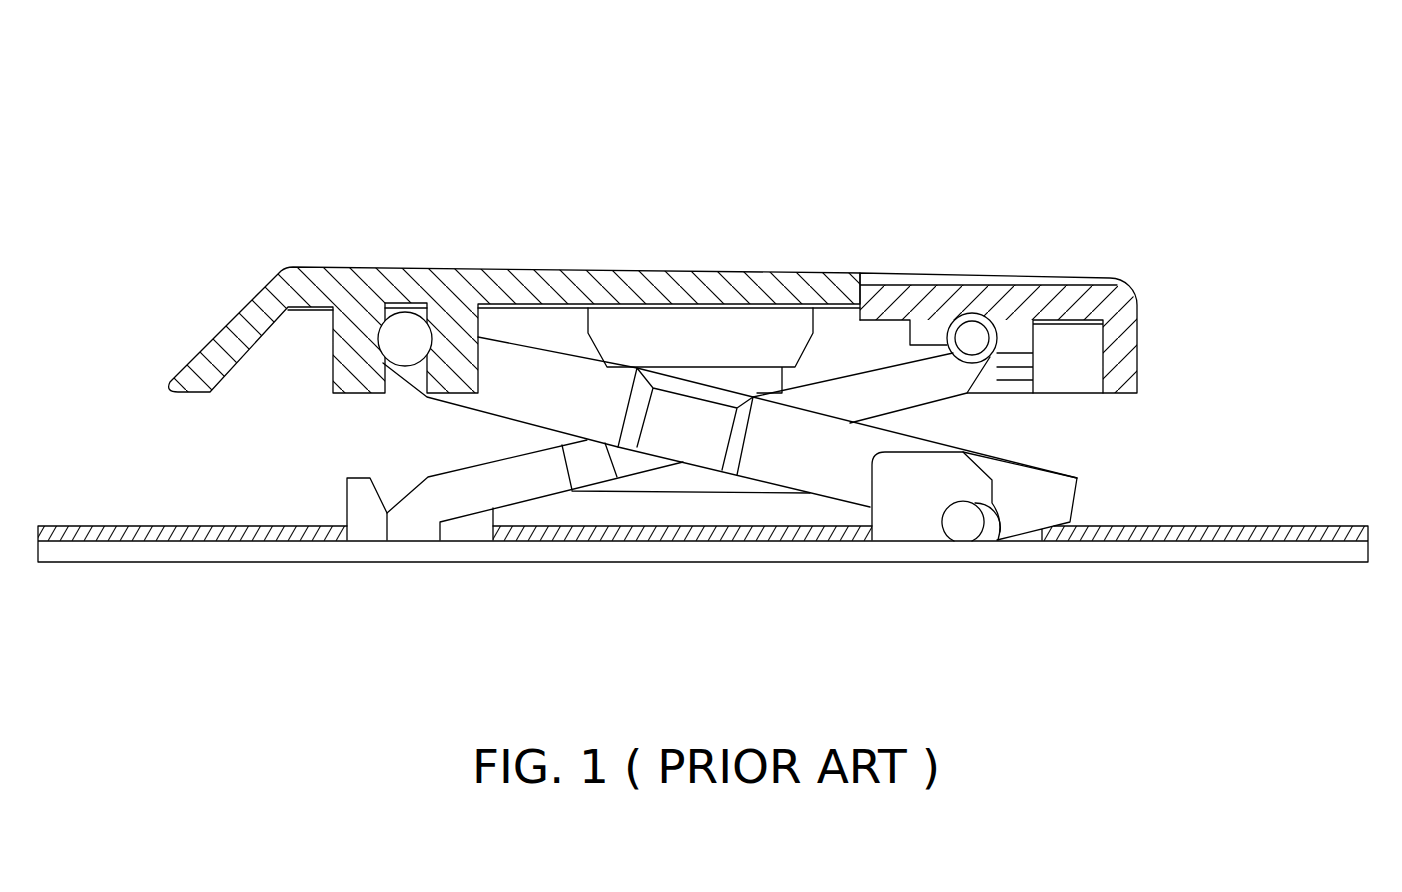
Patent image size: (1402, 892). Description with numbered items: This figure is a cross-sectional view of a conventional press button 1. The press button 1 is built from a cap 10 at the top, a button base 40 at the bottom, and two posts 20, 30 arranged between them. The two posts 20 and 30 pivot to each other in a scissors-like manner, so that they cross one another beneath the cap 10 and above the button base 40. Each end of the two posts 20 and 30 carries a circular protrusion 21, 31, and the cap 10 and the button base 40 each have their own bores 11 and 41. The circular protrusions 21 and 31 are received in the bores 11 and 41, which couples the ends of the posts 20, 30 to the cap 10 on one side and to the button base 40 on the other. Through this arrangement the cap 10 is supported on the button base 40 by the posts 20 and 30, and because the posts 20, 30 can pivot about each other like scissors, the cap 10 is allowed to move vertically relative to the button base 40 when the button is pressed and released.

The press button 1 is at (66, 112).
The cap 10 is at (789, 270).
The bore 11 is at (1020, 319).
The post 20 is at (793, 465).
The circular protrusion 21 is at (403, 311).
The post 30 is at (547, 482).
The circular protrusion 31 is at (971, 322).
The button base 40 is at (1142, 548).
The bore 41 is at (981, 550).